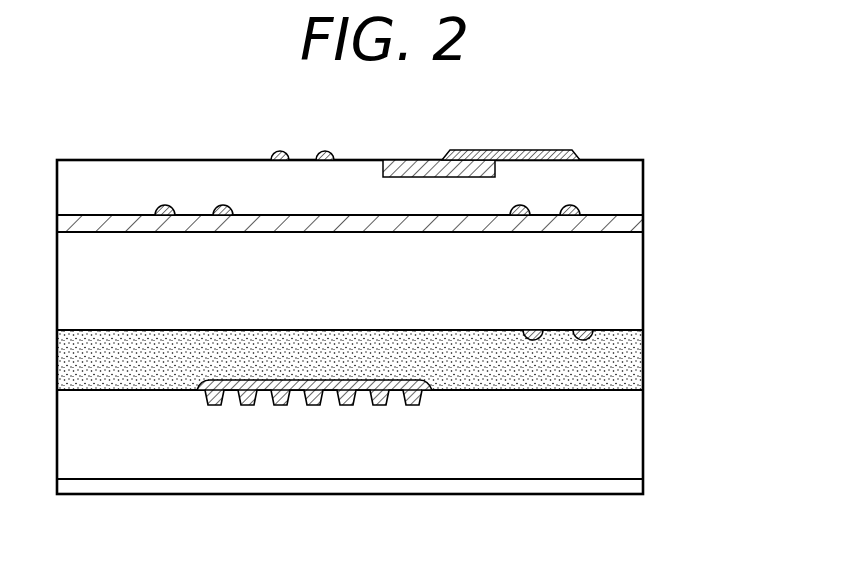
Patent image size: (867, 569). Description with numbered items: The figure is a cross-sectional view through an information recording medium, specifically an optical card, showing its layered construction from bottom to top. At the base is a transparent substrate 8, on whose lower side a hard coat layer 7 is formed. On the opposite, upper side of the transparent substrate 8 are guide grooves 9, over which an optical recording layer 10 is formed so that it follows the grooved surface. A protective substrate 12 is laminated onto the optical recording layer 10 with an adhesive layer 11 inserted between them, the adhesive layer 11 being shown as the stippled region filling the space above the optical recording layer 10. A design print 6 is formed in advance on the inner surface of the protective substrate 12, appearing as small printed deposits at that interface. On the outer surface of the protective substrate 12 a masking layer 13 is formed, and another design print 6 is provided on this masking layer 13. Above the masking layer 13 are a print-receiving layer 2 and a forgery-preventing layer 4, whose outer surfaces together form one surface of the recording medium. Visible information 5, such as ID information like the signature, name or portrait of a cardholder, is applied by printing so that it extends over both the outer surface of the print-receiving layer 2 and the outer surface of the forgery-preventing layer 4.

The print-receiving layer 2 is at (637, 185).
The forgery-preventing layer 4 is at (410, 160).
The visible information 5 is at (284, 157).
The design print 6 is at (163, 208).
The hard coat layer 7 is at (636, 486).
The transparent substrate 8 is at (636, 432).
The guide grooves 9 is at (380, 405).
The optical recording layer 10 is at (430, 380).
The adhesive layer 11 is at (636, 348).
The protective substrate 12 is at (636, 265).
The masking layer 13 is at (637, 225).